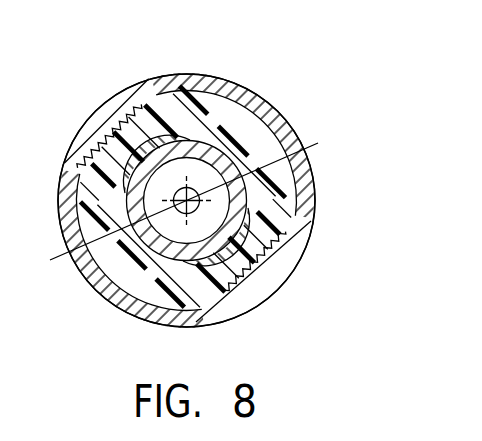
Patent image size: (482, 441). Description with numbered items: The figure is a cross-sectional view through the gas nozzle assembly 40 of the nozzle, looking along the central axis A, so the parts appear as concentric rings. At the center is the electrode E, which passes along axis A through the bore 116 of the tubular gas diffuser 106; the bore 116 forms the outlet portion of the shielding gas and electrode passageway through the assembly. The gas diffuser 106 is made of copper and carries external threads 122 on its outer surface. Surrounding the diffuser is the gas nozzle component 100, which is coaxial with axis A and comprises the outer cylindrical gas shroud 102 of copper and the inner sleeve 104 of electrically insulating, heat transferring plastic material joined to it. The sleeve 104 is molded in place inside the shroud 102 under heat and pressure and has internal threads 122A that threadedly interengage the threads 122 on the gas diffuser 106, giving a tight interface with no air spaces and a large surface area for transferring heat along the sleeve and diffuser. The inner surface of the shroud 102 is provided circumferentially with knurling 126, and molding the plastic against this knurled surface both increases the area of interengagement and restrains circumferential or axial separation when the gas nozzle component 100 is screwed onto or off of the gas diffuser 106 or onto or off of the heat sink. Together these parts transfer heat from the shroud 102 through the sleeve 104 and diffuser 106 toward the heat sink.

The gas nozzle assembly 40 is at (114, 70).
The gas nozzle component 100 is at (92, 301).
The outer cylindrical gas shroud 102 is at (262, 104).
The inner sleeve 104 is at (248, 155).
The tubular gas diffuser 106 is at (204, 147).
The bore 116 is at (221, 204).
The external threads 122 is at (76, 153).
The internal threads 122A is at (165, 258).
The knurling 126 is at (265, 268).
The axis A is at (109, 235).
The electrode E is at (262, 163).